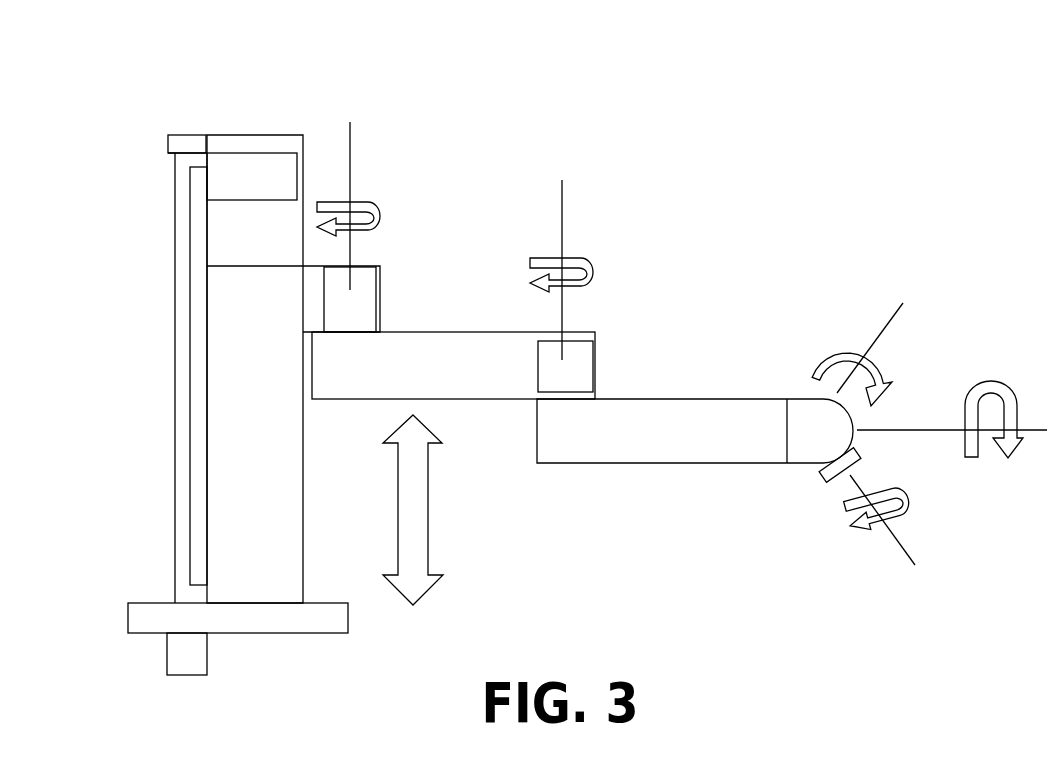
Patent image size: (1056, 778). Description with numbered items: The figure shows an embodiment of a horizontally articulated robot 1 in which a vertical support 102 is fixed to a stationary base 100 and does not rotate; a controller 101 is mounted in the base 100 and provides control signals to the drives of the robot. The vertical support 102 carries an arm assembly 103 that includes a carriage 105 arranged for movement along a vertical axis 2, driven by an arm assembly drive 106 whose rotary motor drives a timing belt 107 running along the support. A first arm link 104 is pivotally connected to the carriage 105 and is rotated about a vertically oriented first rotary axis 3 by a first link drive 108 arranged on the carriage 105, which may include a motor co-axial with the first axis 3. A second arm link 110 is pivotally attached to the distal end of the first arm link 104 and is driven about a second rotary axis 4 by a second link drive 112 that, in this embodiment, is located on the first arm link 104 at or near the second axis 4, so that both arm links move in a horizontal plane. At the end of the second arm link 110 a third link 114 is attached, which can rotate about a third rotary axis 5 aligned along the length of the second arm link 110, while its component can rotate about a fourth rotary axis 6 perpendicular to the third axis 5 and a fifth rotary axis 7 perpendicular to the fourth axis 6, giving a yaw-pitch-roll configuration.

The robot 1 is at (98, 90).
The vertical axis 2 is at (428, 503).
The first rotary axis 3 is at (350, 142).
The second rotary axis 4 is at (562, 205).
The third rotary axis 5 is at (942, 428).
The fourth rotary axis 6 is at (885, 320).
The fifth rotary axis 7 is at (900, 545).
The base 100 is at (132, 620).
The controller 101 is at (168, 142).
The vertical support 102 is at (185, 510).
The arm assembly 103 is at (603, 507).
The first arm link 104 is at (443, 332).
The carriage 105 is at (220, 307).
The arm assembly drive 106 is at (222, 172).
The timing belt 107 is at (197, 250).
The first link drive 108 is at (363, 292).
The second arm link 110 is at (680, 399).
The second link drive 112 is at (582, 368).
The third link 114 is at (805, 452).